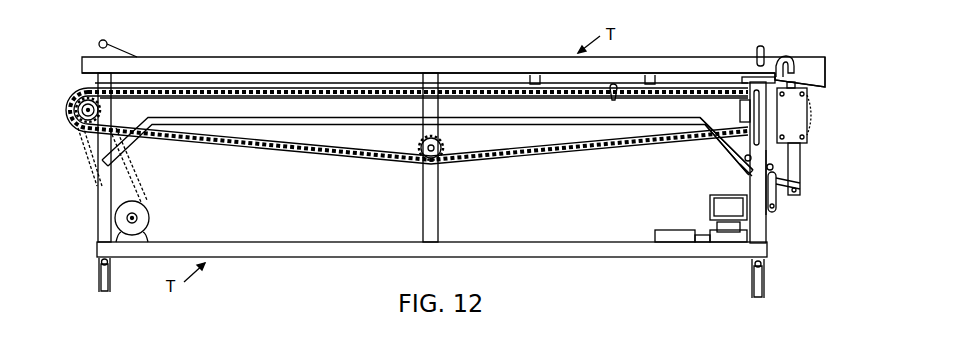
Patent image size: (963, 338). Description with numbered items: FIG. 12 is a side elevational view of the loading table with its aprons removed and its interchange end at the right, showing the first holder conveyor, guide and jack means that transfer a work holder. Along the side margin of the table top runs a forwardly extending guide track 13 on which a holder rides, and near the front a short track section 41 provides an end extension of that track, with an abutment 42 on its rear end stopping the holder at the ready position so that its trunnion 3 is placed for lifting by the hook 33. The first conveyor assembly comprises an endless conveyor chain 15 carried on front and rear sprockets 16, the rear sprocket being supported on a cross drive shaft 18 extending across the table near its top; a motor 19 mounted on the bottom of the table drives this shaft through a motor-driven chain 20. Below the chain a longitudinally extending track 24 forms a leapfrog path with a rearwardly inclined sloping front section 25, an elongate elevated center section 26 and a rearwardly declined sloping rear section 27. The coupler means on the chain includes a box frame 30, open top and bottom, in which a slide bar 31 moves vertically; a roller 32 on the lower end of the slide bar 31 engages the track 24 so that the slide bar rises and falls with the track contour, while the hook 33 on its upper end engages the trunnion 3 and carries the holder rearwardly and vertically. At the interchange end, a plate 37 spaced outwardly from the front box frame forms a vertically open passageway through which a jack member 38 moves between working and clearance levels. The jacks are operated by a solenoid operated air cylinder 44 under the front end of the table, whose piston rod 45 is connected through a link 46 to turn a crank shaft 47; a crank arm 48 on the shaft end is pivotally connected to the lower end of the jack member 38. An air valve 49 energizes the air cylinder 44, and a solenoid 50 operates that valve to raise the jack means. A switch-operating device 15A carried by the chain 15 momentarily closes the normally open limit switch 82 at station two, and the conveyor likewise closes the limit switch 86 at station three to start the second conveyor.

The trunnion 3 is at (99, 44).
The guide track 13 is at (190, 62).
The endless conveyor chain 15 is at (280, 155).
The switch-operating device 15A is at (614, 95).
The sprocket 16 is at (79, 118).
The cross drive shaft 18 is at (86, 110).
The motor 19 is at (141, 216).
The motor-driven chain 20 is at (139, 180).
The track 24 is at (494, 160).
The sloping front section 25 is at (722, 150).
The center section 26 is at (343, 120).
The sloping rear section 27 is at (131, 143).
The box frame 30 is at (745, 106).
The slide bar 31 is at (748, 119).
The roller 32 is at (744, 168).
The hook 33 is at (790, 57).
The plate 37 is at (800, 118).
The jack member 38 is at (801, 150).
The track section 41 is at (820, 66).
The abutment 42 is at (756, 50).
The air cylinder 44 is at (720, 206).
The piston rod 45 is at (770, 210).
The link 46 is at (774, 193).
The crank shaft 47 is at (774, 166).
The crank arm 48 is at (778, 181).
The air valve 49 is at (732, 238).
The solenoid 50 is at (676, 238).
The limit switch 82 is at (651, 75).
The limit switch 86 is at (535, 76).